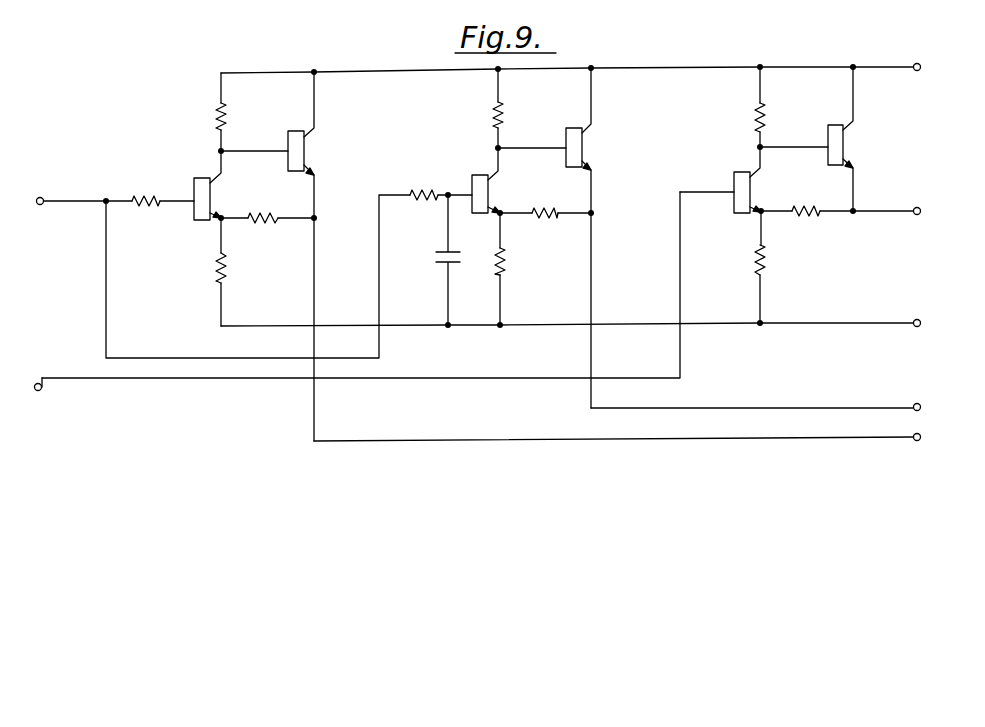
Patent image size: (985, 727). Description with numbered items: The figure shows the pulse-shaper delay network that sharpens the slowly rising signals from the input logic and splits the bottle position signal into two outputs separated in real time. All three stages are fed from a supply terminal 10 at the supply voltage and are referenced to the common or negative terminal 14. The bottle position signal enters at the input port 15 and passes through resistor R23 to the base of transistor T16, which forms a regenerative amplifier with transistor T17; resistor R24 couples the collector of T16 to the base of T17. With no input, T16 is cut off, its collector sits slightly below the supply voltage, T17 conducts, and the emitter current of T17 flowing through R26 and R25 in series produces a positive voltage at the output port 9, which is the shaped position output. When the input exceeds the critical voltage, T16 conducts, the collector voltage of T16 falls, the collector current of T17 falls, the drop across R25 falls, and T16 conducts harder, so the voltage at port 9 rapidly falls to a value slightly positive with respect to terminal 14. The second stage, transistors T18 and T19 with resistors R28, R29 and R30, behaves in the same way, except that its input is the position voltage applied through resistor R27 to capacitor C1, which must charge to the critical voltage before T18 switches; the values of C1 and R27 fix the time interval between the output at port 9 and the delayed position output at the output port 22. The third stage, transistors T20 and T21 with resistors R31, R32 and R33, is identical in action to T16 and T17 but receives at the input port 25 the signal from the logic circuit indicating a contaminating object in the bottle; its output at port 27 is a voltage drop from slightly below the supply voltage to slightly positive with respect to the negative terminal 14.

The output port 9 is at (634, 431).
The positive supply terminal 10 is at (930, 69).
The common terminal 14 is at (930, 325).
The input port 15 is at (55, 192).
The output port 22 is at (785, 399).
The input terminal f(I) 25 is at (30, 380).
The output port 27 is at (903, 204).
The resistor 82K R23 is at (150, 201).
The resistor 15K R24 is at (242, 112).
The resistor R25 is at (243, 272).
The resistor R26 is at (267, 220).
The resistor R27 is at (438, 198).
The resistor 9.1K R28 is at (520, 108).
The resistor 620 R29 is at (519, 269).
The resistor 1.5K R30 is at (545, 218).
The resistor 15K R31 is at (778, 107).
The resistor 1.5K R32 is at (781, 267).
The resistor 2.4K R33 is at (807, 214).
The capacitor C1 is at (456, 260).
The transistor T16 is at (220, 185).
The transistor T17 is at (280, 256).
The transistor T18 is at (498, 180).
The transistor T19 is at (557, 238).
The transistor T20 is at (732, 180).
The transistor T21 is at (820, 139).